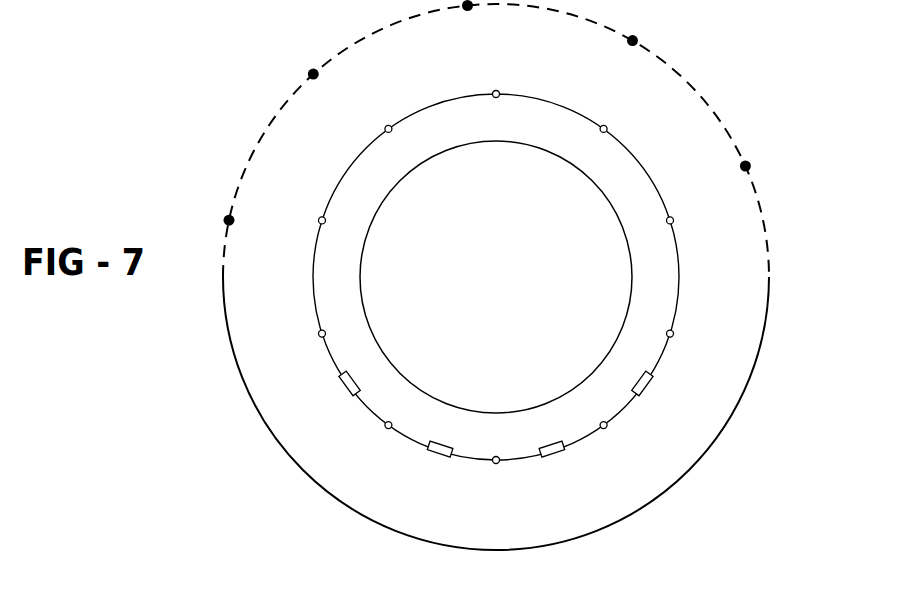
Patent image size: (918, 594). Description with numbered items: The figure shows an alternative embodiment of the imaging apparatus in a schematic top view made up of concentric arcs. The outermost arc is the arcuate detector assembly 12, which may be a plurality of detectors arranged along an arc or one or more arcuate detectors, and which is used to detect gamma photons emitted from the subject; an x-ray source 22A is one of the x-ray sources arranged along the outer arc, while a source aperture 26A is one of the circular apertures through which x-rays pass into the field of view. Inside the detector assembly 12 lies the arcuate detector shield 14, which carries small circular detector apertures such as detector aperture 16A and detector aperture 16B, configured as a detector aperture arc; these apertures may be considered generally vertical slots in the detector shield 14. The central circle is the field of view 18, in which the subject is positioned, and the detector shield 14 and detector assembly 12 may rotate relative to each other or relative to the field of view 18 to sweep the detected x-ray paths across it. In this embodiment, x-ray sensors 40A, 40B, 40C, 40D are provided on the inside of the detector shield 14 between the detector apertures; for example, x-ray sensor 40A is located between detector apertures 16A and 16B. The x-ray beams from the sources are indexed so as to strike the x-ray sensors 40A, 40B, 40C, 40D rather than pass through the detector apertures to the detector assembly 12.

The arcuate detector assembly 12 is at (742, 396).
The arcuate detector shield 14 is at (518, 463).
The field of view 18 is at (373, 330).
The x-ray source 22A is at (227, 218).
The source aperture 26A is at (320, 217).
The detector aperture 16A is at (318, 331).
The detector aperture 16B is at (385, 427).
The x-ray sensor 40A is at (344, 383).
The x-ray sensor 40B is at (438, 455).
The x-ray sensor 40C is at (554, 453).
The x-ray sensor 40D is at (647, 386).